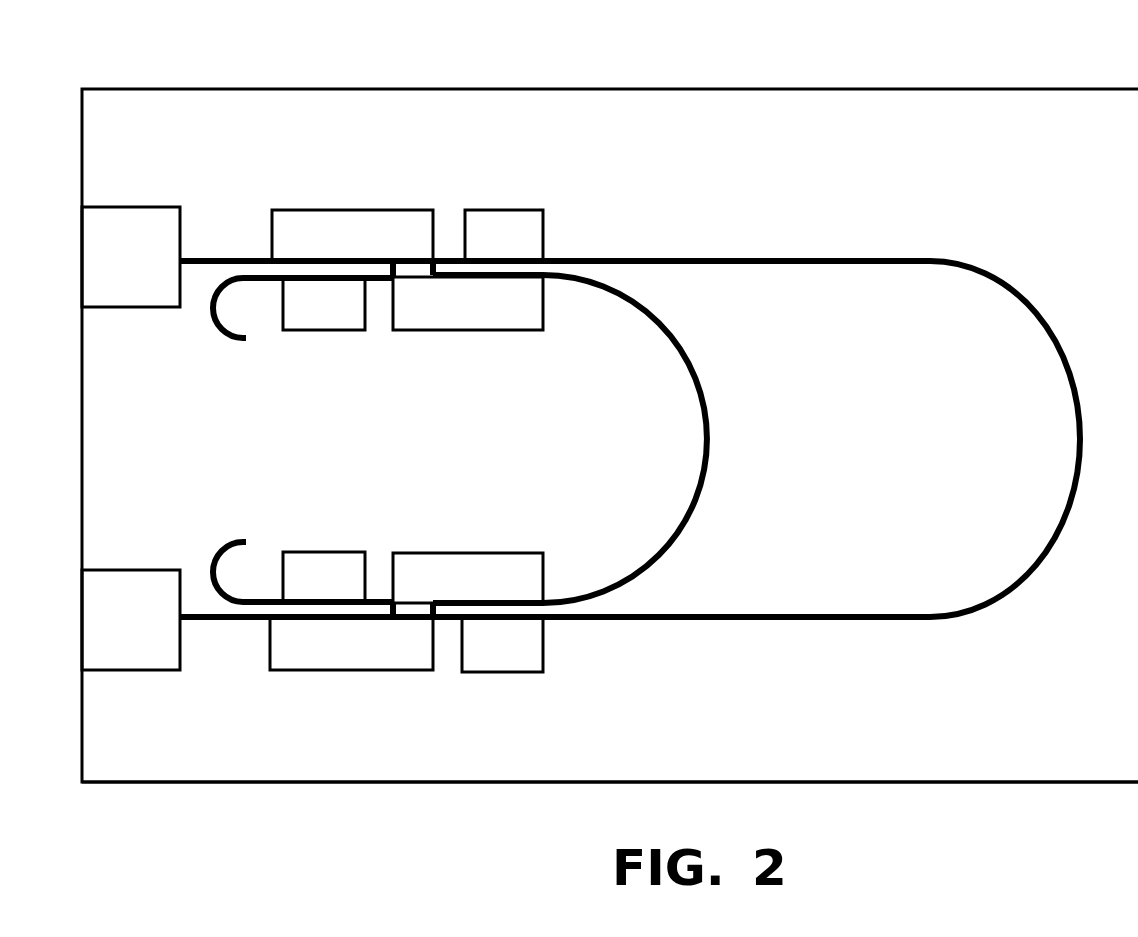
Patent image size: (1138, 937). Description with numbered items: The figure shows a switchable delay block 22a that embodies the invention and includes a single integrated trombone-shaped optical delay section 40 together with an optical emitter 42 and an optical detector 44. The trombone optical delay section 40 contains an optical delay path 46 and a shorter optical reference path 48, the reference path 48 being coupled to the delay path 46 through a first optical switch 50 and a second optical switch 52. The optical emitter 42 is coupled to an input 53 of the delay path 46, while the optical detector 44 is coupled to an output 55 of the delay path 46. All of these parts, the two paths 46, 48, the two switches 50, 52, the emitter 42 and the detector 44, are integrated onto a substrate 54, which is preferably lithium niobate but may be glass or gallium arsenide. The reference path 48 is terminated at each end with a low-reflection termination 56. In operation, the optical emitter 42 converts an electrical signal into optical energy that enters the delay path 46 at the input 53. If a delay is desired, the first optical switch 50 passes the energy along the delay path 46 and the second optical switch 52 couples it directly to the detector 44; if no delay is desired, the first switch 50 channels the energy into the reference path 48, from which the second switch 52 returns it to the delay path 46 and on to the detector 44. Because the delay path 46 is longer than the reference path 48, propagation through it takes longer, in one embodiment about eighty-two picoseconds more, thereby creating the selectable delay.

The switchable delay block 22a is at (917, 82).
The trombone optical delay section 40 is at (735, 222).
The optical emitter 42 is at (150, 207).
The optical detector 44 is at (133, 570).
The optical delay path 46 is at (1023, 303).
The optical reference path 48 is at (710, 448).
The first optical switch 50 is at (545, 222).
The second optical switch 52 is at (493, 552).
The input of the delay path 53 is at (220, 261).
The substrate 54 is at (387, 783).
The output of the delay path 55 is at (233, 618).
The low-reflection termination 56 is at (246, 338).